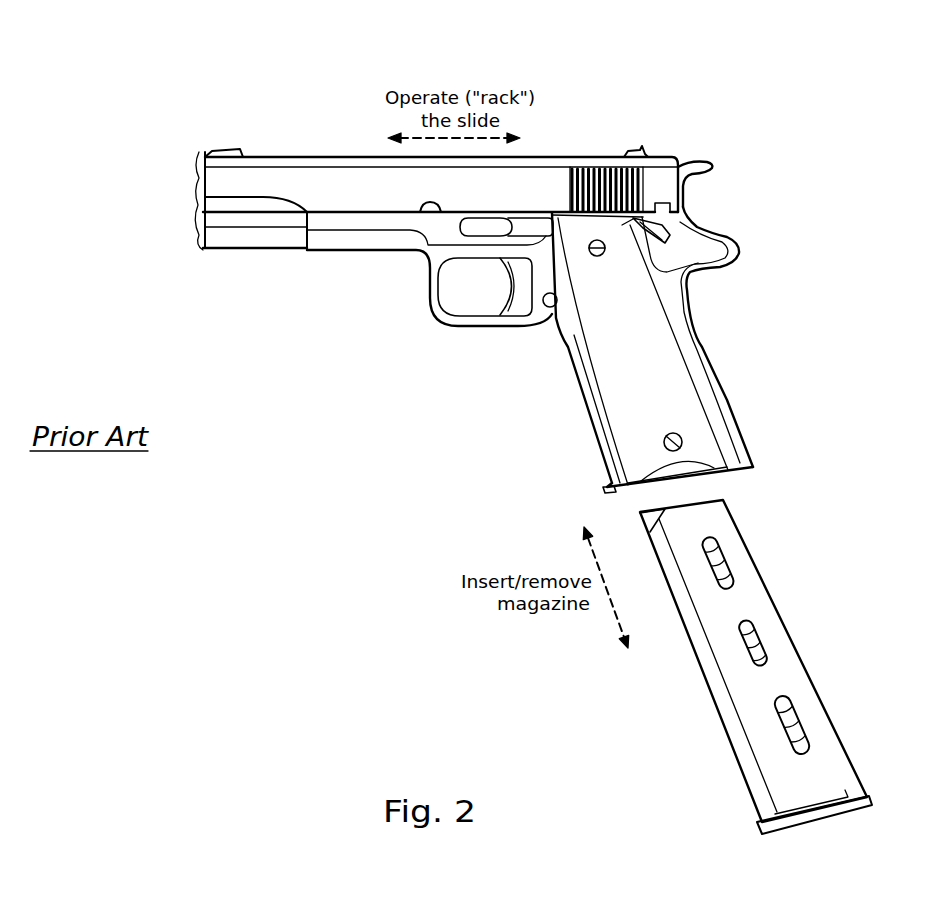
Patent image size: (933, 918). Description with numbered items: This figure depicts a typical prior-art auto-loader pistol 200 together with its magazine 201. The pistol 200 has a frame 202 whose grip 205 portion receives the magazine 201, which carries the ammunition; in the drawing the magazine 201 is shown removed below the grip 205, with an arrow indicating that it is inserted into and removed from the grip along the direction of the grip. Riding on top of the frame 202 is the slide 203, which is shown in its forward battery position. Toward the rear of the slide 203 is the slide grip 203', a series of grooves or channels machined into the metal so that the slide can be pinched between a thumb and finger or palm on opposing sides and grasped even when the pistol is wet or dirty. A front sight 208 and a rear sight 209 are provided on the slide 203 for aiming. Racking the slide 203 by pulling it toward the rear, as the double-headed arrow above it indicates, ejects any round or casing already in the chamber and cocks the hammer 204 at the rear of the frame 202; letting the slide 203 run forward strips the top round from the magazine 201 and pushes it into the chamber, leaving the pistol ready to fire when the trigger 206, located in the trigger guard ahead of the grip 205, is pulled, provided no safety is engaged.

The pistol 200 is at (795, 159).
The magazine 201 is at (822, 582).
The frame 202 is at (519, 350).
The slide 203 is at (436, 164).
The slide grip 203' is at (607, 146).
The hammer 204 is at (711, 144).
The grip 205 is at (606, 351).
The trigger 206 is at (477, 325).
The front sight 208 is at (248, 108).
The rear sight 209 is at (659, 110).